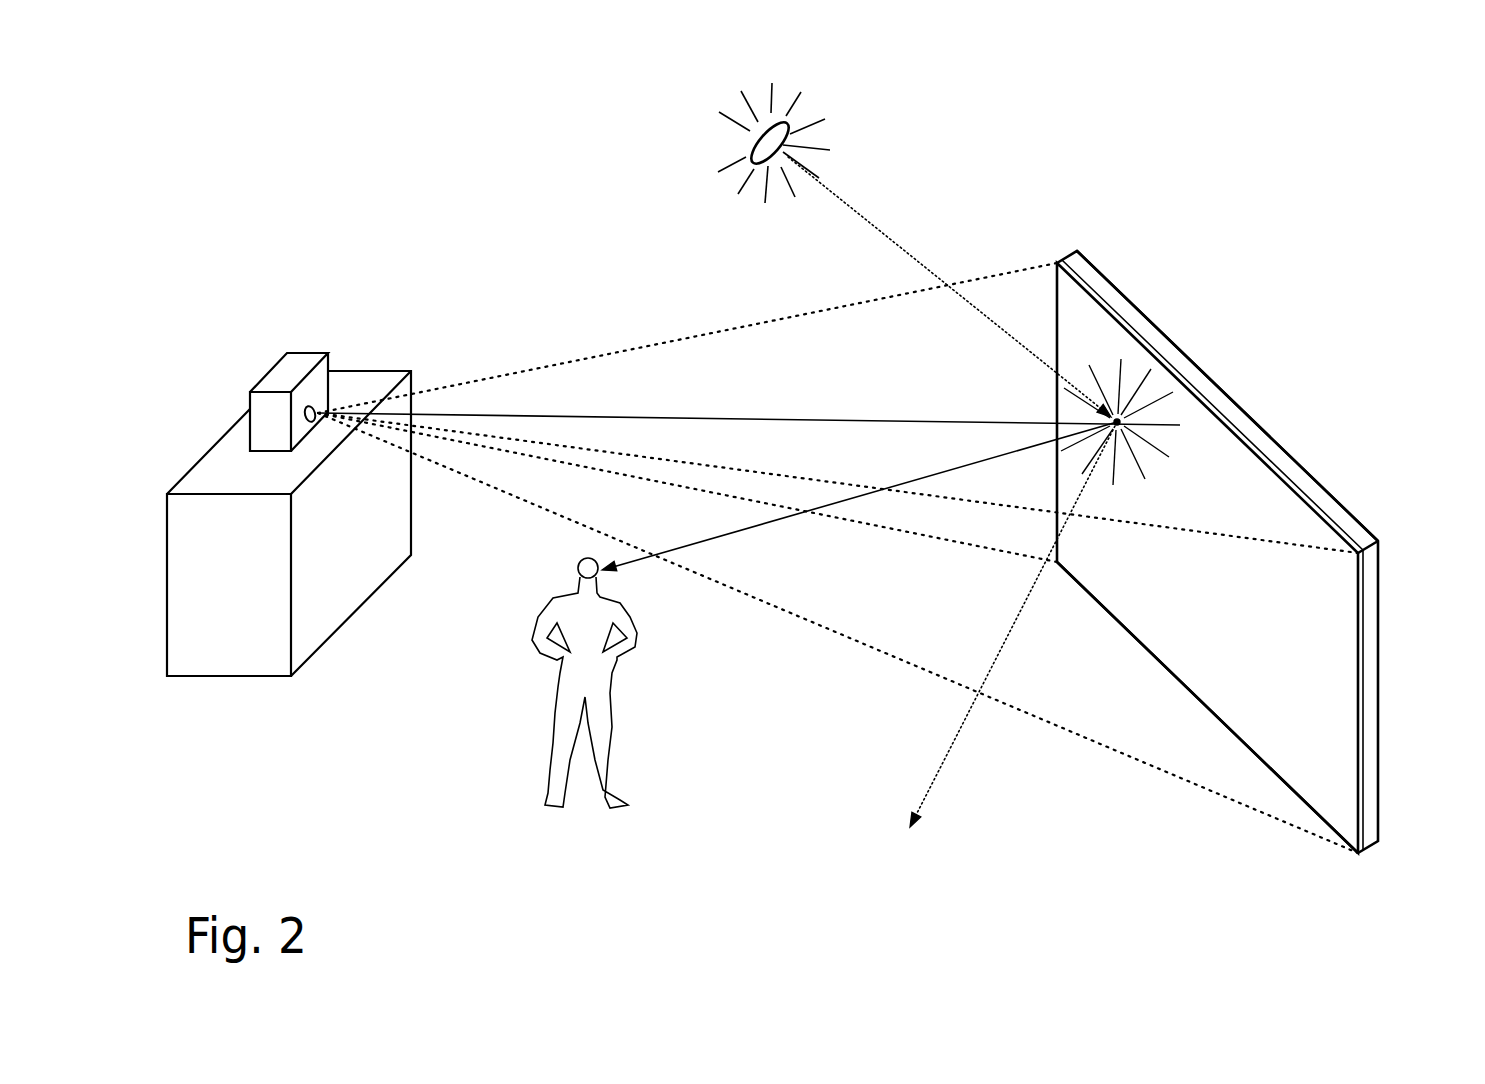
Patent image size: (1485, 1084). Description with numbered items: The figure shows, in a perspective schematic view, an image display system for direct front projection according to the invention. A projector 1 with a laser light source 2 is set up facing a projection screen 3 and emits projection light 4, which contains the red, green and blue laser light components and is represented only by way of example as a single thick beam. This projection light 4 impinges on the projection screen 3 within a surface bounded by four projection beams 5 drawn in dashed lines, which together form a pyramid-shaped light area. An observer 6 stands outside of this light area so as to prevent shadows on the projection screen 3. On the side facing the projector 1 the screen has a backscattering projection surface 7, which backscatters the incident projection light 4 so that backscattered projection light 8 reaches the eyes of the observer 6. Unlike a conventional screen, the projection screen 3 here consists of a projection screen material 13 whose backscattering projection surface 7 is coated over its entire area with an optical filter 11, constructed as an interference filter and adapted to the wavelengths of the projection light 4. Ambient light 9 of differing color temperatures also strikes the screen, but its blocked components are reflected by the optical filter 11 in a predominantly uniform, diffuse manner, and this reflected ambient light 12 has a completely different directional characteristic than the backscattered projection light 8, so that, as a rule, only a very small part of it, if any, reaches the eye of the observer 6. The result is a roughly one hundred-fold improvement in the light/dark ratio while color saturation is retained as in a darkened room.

The projector 1 is at (309, 353).
The laser light source 2 is at (237, 677).
The projection screen 3 is at (1040, 255).
The projection light 4 is at (820, 417).
The projection beams 5 is at (752, 327).
The observer 6 is at (612, 688).
The backscattering projection surface 7 is at (1363, 743).
The backscattered projection light 8 is at (707, 538).
The ambient light 9 is at (850, 213).
The optical filter 11 is at (1273, 777).
The reflected ambient light 12 is at (968, 713).
The projection screen material 13 is at (1235, 405).